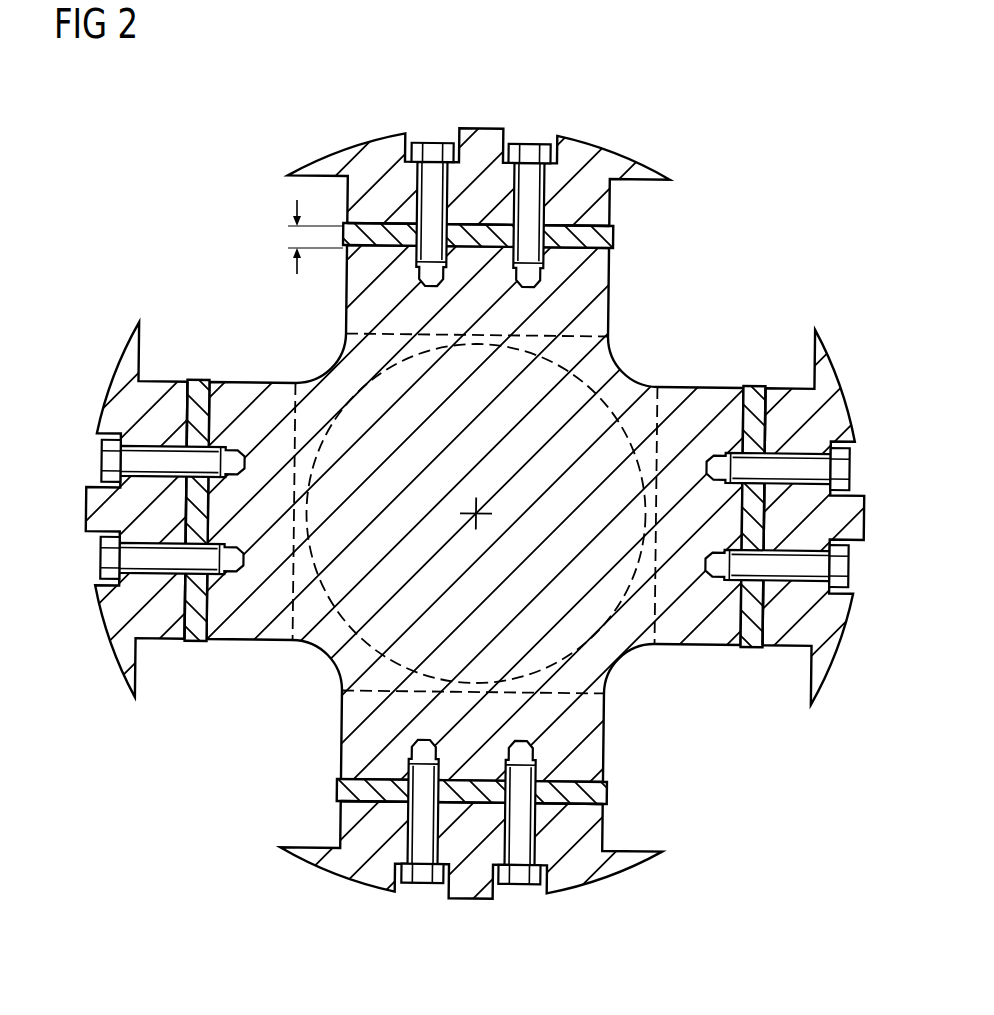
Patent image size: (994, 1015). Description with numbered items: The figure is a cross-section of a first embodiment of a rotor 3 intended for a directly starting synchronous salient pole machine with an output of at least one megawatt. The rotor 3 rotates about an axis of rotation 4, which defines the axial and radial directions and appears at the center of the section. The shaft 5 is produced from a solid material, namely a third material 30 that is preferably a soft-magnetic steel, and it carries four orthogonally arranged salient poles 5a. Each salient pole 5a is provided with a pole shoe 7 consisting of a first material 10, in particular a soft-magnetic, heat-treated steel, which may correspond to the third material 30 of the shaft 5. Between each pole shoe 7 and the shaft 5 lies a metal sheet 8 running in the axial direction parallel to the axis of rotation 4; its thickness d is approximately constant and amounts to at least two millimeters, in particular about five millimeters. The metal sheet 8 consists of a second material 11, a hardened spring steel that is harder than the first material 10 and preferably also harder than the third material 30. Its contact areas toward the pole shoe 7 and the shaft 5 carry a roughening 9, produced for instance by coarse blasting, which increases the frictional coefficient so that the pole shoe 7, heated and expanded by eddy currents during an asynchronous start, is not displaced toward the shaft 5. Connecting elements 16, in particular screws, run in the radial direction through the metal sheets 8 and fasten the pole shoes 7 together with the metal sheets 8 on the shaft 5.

The rotor 3 is at (497, 507).
The axis of rotation 4 is at (478, 516).
The shaft 5 is at (497, 507).
The third material 30 is at (633, 670).
The salient pole 5a is at (590, 287).
The pole shoe 7 is at (488, 515).
The first material 10 is at (580, 158).
The metal sheet 8 is at (497, 507).
The second material 11 is at (593, 237).
The roughening 9 is at (379, 224).
The connecting element 16 is at (527, 150).
The plate thickness d is at (297, 236).